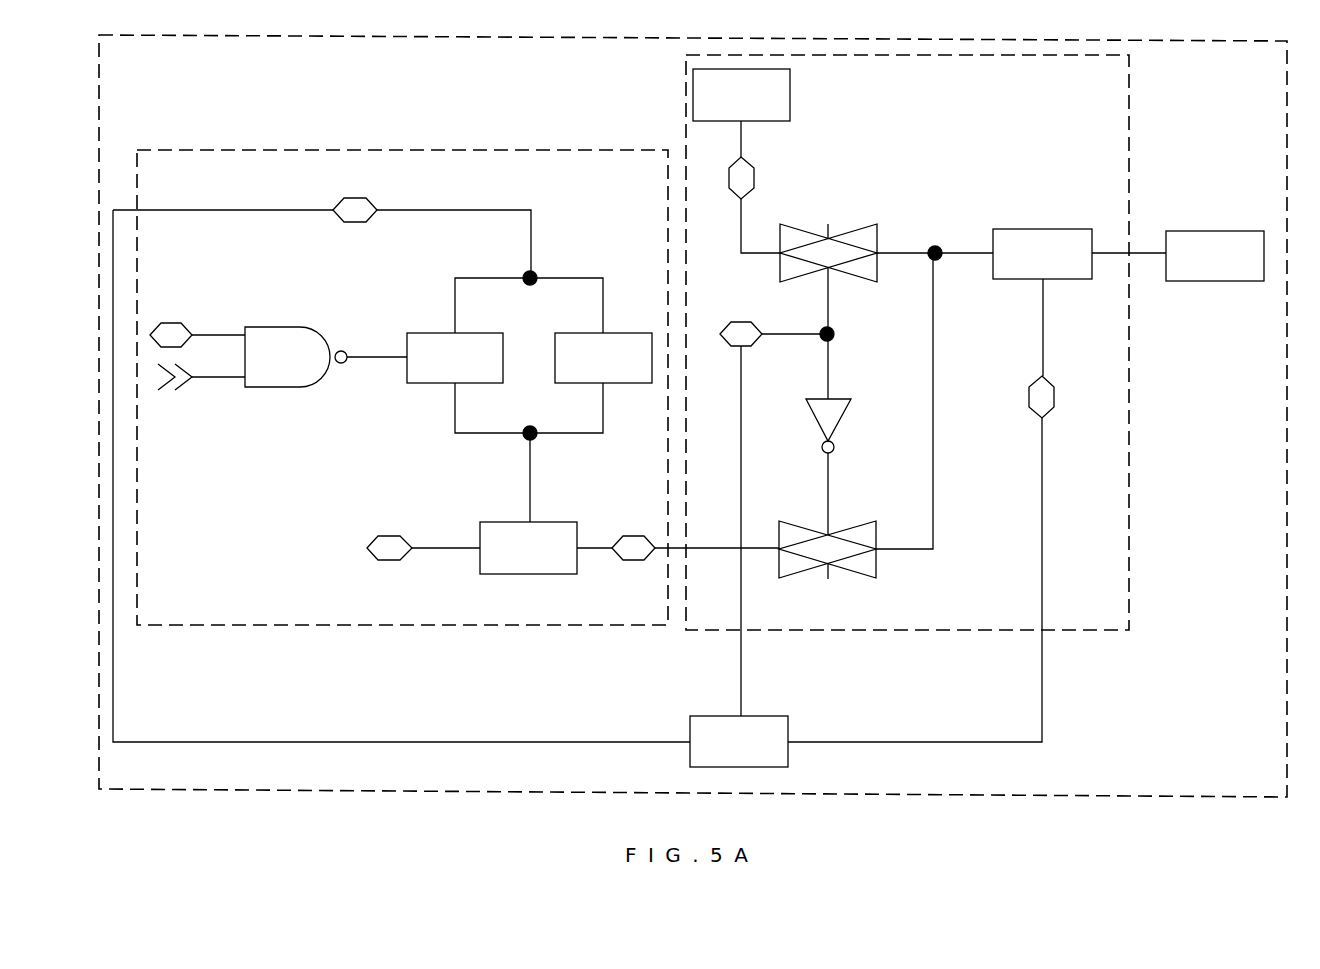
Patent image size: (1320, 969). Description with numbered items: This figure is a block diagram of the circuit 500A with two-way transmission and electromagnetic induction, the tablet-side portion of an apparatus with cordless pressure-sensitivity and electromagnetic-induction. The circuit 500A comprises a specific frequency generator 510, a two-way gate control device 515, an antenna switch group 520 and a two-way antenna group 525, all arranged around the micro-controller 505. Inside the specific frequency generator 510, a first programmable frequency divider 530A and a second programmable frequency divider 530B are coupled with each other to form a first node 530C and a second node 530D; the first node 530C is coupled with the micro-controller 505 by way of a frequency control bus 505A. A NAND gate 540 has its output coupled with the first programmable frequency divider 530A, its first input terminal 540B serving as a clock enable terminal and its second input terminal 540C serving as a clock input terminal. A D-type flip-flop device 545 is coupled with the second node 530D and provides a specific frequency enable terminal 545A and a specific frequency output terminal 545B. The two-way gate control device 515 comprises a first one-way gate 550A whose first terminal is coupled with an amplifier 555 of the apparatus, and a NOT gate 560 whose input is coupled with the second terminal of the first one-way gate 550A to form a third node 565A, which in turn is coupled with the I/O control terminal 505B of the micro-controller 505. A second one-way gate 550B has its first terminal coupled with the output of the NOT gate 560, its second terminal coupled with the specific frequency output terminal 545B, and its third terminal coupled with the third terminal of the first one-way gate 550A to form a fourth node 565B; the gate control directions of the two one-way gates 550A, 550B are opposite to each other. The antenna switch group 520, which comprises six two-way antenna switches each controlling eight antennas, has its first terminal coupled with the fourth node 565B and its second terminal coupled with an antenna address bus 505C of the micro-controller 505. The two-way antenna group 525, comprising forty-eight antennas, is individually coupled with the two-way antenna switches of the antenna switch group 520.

The circuit with two-way transmission and electromagnetic induction 500A is at (1235, 797).
The micro-controller 505 is at (761, 753).
The frequency control bus 505A is at (356, 192).
The I/O control terminal 505B is at (741, 251).
The antenna address bus 505C is at (1102, 405).
The specific frequency generator 510 is at (291, 626).
The two-way gate control device 515 is at (1083, 631).
The antenna switch group 520 is at (1065, 267).
The two-way antenna group 525 is at (1237, 269).
The first programmable frequency divider 530A is at (484, 368).
The second programmable frequency divider 530B is at (632, 368).
The first node 530C is at (532, 271).
The second node 530D is at (532, 441).
The NAND gate 540 is at (306, 369).
The first input terminal 540B is at (172, 317).
The second input terminal 540C is at (172, 393).
The D-type flip-flop device 545 is at (550, 560).
The specific frequency enable terminal 545A is at (391, 529).
The specific frequency output terminal 545B is at (635, 529).
The first one-way gate 550A is at (828, 238).
The second one-way gate 550B is at (877, 565).
The amplifier 555 is at (763, 107).
The NOT gate 560 is at (843, 418).
The third node 565A is at (834, 334).
The fourth node 565B is at (935, 245).